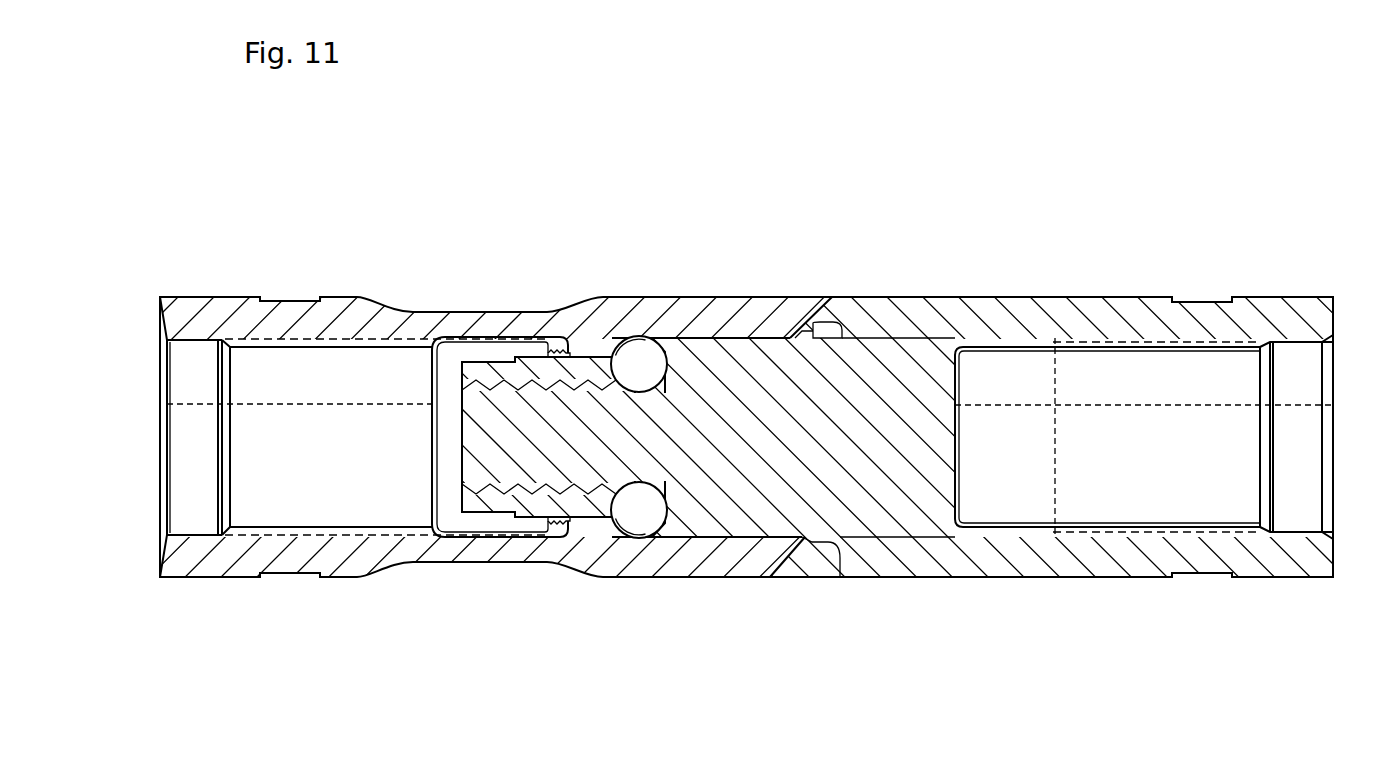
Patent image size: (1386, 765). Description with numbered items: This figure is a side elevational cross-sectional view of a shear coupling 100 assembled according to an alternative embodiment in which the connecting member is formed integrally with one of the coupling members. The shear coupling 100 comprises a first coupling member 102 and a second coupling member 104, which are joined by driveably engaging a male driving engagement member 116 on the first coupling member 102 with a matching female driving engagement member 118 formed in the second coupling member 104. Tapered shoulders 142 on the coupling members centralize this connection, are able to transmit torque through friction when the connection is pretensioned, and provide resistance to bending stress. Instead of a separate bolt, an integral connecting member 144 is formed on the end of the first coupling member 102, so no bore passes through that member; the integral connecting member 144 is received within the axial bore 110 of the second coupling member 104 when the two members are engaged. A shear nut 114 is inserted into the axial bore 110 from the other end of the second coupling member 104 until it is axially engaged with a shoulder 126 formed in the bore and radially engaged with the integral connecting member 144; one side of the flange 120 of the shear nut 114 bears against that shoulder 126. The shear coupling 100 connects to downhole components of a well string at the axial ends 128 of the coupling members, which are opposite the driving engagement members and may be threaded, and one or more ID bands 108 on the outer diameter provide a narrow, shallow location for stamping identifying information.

The shear coupling 100 is at (180, 230).
The first coupling member 102 is at (1056, 297).
The second coupling member 104 is at (212, 578).
The ID band 108 is at (295, 297).
The axial bore 110 is at (330, 472).
The shear nut 114 is at (502, 500).
The male driving engagement member 116 is at (742, 497).
The female driving engagement member 118 is at (746, 305).
The flange 120 is at (563, 340).
The shoulder 126 is at (598, 335).
The axial ends 128 is at (178, 475).
The tapered shoulders 142 is at (842, 322).
The integral connecting member 144 is at (493, 430).